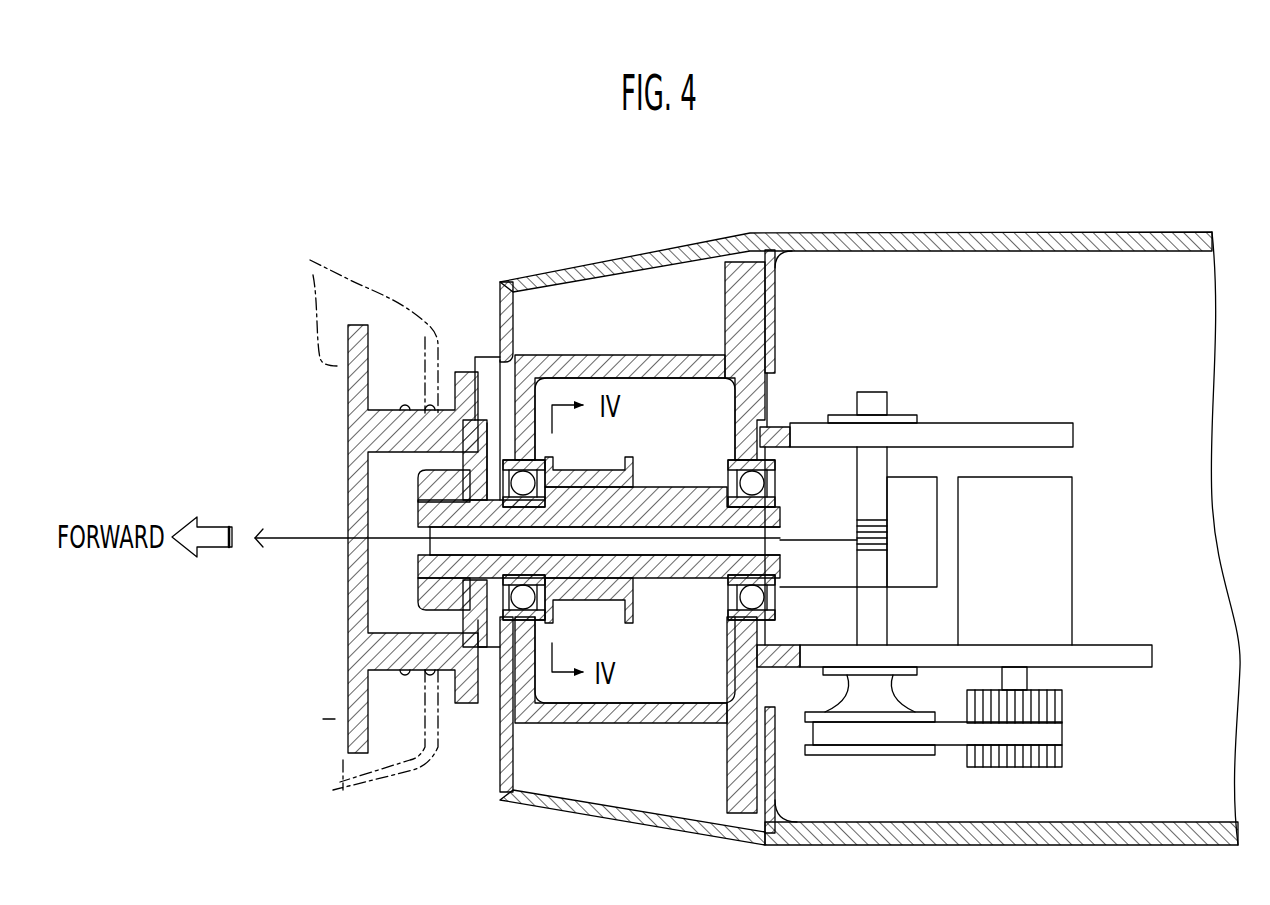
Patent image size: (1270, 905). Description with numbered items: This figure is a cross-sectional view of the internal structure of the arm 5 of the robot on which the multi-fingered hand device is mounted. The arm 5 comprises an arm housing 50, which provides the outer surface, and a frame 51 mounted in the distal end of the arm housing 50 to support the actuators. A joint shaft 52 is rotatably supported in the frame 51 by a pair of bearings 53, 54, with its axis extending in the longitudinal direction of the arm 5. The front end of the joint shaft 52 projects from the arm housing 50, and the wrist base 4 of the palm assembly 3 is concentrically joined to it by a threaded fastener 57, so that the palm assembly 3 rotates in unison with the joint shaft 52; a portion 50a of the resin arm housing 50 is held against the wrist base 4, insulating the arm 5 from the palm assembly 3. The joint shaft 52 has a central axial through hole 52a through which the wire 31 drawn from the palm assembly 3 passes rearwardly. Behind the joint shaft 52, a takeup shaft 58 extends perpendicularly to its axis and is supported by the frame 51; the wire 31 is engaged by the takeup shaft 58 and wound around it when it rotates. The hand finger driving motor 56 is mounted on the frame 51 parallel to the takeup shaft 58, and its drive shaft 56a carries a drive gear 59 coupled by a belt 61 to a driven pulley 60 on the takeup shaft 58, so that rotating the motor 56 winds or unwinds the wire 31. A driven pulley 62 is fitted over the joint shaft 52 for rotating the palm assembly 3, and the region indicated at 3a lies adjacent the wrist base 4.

The palm assembly 3 is at (437, 288).
The crankcase cover outline 3a is at (370, 266).
The wrist base 4 is at (347, 401).
The arm 5 is at (1036, 192).
The wire 31 is at (305, 538).
The arm housing 50 is at (920, 232).
The portion of arm housing 50a is at (480, 355).
The frame 51 is at (682, 348).
The joint shaft 52 is at (668, 491).
The through hole 52a is at (685, 550).
The bearing 53 is at (546, 457).
The bearing 54 is at (776, 487).
The hand finger driving motor 56 is at (1075, 533).
The drive shaft 56a is at (1030, 680).
The threaded fastener 57 is at (418, 485).
The takeup shaft 58 is at (888, 465).
The drive gear 59 is at (1063, 757).
The driven pulley 60 is at (875, 757).
The belt 61 is at (957, 763).
The driven pulley 62 is at (630, 623).